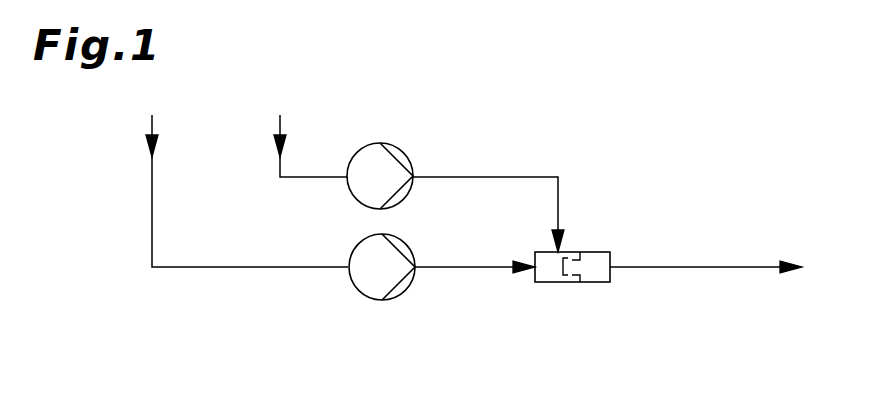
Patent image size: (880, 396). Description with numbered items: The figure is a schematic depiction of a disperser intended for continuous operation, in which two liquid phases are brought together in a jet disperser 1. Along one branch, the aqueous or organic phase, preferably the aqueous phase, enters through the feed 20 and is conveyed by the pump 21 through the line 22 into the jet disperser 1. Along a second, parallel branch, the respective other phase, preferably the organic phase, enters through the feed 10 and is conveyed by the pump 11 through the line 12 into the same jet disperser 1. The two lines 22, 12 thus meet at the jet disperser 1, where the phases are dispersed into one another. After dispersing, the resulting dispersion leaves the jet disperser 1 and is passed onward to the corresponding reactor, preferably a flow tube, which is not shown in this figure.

The jet disperser 1 is at (570, 283).
The feed 10 is at (153, 173).
The pump 11 is at (373, 288).
The line 12 is at (490, 268).
The feed 20 is at (281, 175).
The pump 21 is at (402, 152).
The line 22 is at (518, 177).